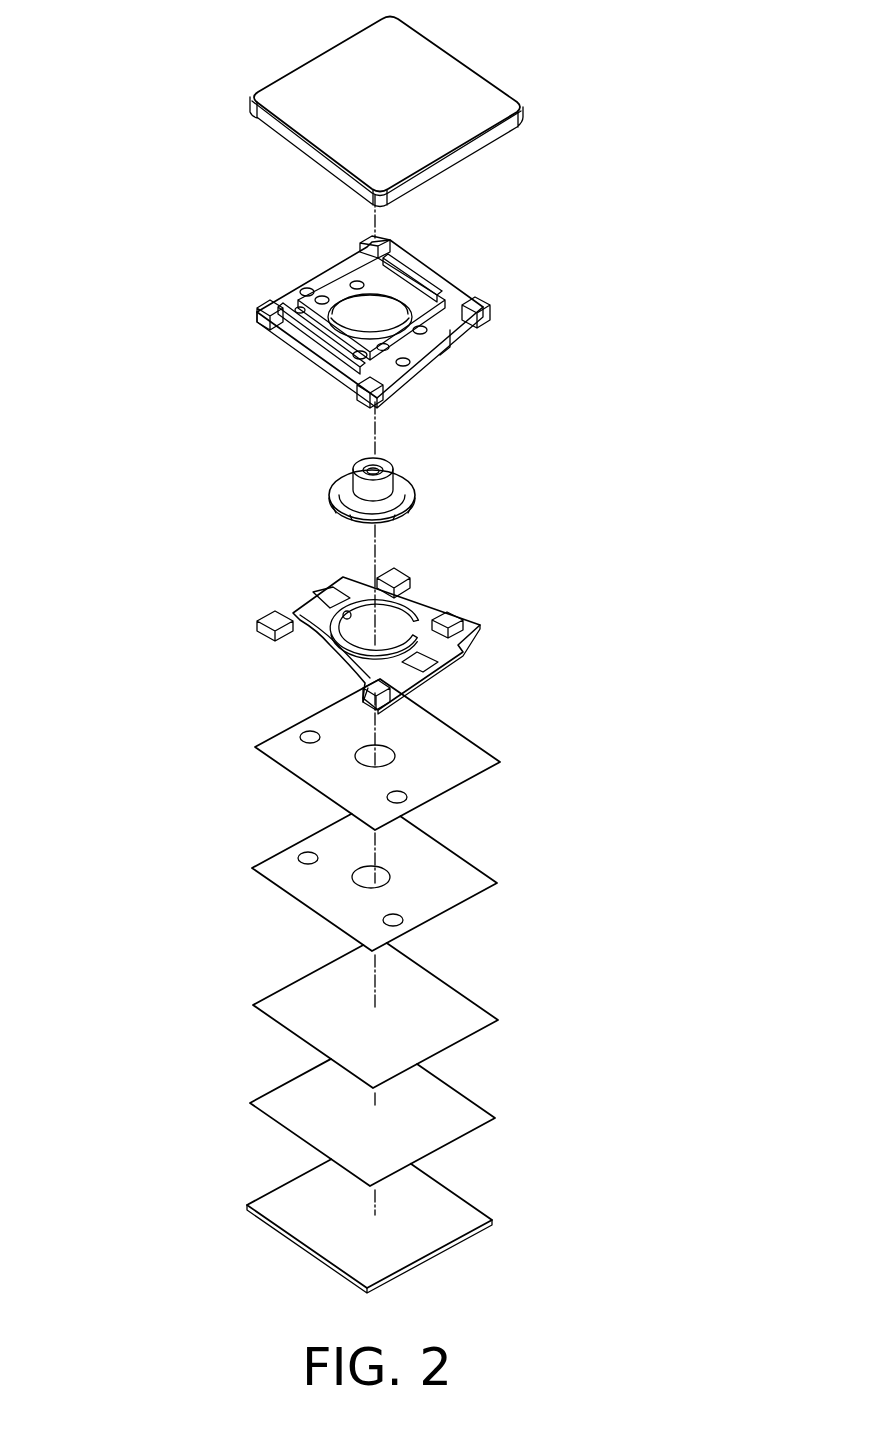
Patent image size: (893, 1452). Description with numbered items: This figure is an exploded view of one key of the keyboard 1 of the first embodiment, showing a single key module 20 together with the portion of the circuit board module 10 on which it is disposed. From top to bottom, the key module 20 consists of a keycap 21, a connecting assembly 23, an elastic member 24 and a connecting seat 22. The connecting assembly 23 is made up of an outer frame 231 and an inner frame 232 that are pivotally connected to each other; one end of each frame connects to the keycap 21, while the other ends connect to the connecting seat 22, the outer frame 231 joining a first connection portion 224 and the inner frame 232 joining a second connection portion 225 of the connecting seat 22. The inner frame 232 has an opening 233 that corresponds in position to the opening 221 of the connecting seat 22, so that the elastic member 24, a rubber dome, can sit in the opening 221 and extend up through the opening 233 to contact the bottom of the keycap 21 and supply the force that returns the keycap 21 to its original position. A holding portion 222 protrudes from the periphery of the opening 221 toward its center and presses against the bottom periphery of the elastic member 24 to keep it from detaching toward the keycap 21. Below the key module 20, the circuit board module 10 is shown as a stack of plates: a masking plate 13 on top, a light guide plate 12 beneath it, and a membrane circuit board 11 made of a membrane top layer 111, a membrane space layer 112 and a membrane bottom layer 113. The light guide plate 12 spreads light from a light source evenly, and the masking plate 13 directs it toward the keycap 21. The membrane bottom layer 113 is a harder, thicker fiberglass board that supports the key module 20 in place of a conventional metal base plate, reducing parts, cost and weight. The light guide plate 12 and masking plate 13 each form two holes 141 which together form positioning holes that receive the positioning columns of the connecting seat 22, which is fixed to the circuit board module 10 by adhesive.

The keyboard 1 is at (135, 102).
The circuit board module 10 is at (247, 703).
The membrane circuit board 11 is at (236, 941).
The membrane top layer 111 is at (293, 1001).
The membrane space layer 112 is at (277, 1103).
The membrane bottom layer 113 is at (275, 1200).
The light guide plate 12 is at (455, 870).
The masking plate 13 is at (457, 752).
The hole 141 is at (308, 733).
The key module 20 is at (210, 223).
The keycap 21 is at (312, 75).
The connecting seat 22 is at (348, 617).
The opening 221 is at (362, 622).
The holding portion 222 is at (410, 610).
The first connection portion 224 is at (278, 617).
The second connection portion 225 is at (397, 575).
The connecting assembly 23 is at (395, 306).
The outer frame 231 is at (455, 302).
The inner frame 232 is at (410, 292).
The opening 233 is at (352, 312).
The elastic member 24 is at (340, 487).